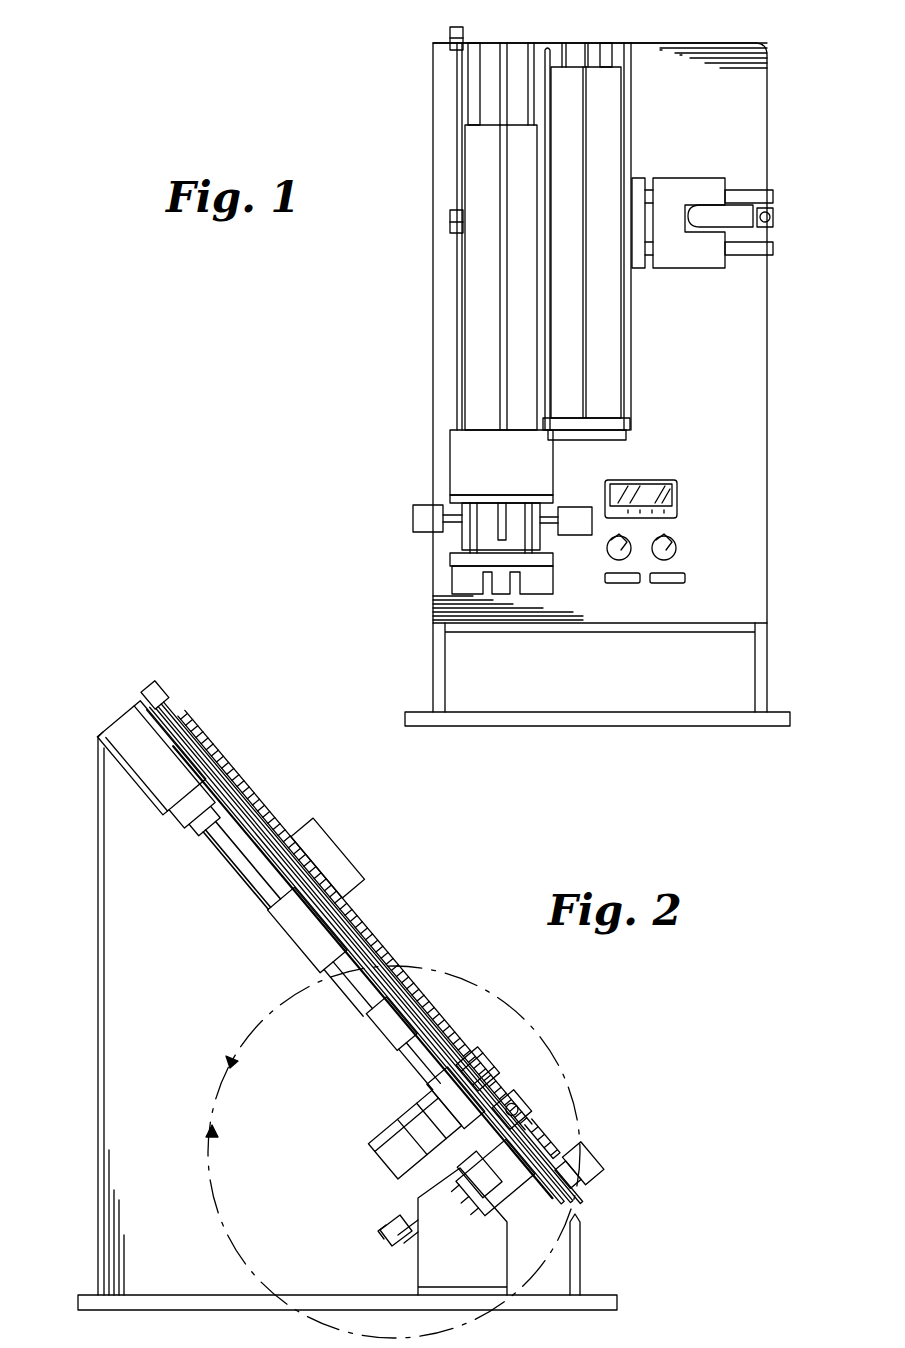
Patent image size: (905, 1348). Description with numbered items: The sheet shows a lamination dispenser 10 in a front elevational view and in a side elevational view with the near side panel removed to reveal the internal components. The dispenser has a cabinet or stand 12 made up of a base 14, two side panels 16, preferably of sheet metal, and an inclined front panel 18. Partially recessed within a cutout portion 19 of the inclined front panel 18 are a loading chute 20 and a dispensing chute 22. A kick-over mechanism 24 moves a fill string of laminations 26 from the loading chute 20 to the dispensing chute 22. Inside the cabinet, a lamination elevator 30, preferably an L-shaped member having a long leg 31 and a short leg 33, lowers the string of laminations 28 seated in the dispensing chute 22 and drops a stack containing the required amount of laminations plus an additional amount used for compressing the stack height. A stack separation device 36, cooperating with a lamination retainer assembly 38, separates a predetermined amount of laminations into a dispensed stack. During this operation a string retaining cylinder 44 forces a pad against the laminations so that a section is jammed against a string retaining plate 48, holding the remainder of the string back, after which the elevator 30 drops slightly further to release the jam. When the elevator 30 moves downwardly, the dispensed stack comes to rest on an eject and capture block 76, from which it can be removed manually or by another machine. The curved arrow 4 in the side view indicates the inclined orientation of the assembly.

In FIG. 1, the lamination dispenser 10 is at (412, 125).
In FIG. 2, the lamination dispenser 10 is at (432, 890).
In FIG. 1, the cabinet or stand 12 is at (740, 503).
In FIG. 1, the base 14 is at (790, 722).
In FIG. 2, the base 14 is at (616, 1297).
In FIG. 1, the side panels 16 is at (445, 662).
In FIG. 2, the side panels 16 is at (168, 886).
In FIG. 1, the inclined front panel 18 is at (696, 404).
In FIG. 2, the inclined front panel 18 is at (578, 1207).
In FIG. 1, the cutout portion 19 is at (602, 50).
In FIG. 1, the loading chute 20 is at (628, 148).
In FIG. 1, the dispensing chute 22 is at (460, 245).
In FIG. 1, the kick-over mechanism 24 is at (690, 268).
In FIG. 1, the fill string of laminations 26 is at (573, 330).
In FIG. 1, the string of laminations 28 is at (475, 150).
In FIG. 2, the lamination elevator 30 is at (290, 940).
In FIG. 2, the long leg 31 is at (405, 1047).
In FIG. 2, the short leg 33 is at (562, 1158).
In FIG. 2, the stack separation device 36 is at (438, 1208).
In FIG. 1, the lamination retainer assembly 38 is at (480, 505).
In FIG. 2, the lamination retainer assembly 38 is at (535, 1100).
In FIG. 2, the string retaining cylinder 44 is at (440, 1098).
In FIG. 1, the string retaining plate 48 is at (535, 460).
In FIG. 2, the string retaining plate 48 is at (502, 1043).
In FIG. 2, the eject and capture block 76 is at (565, 1175).
In FIG. 2, the rotation direction 4 is at (392, 1152).